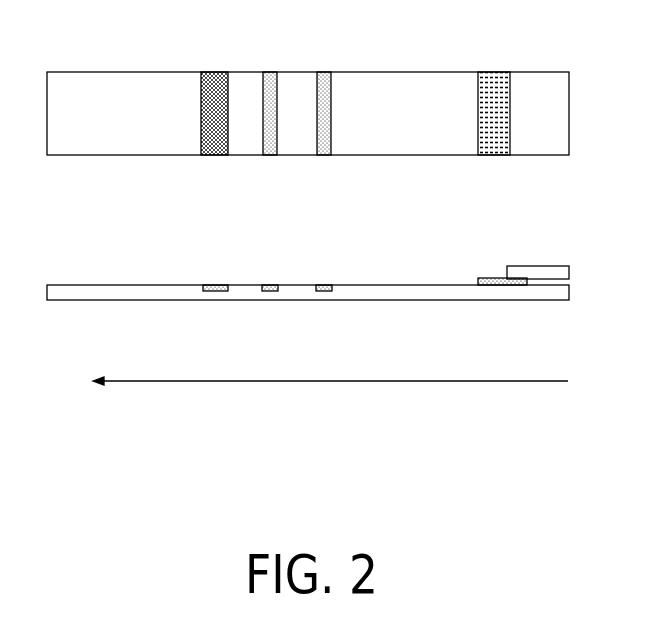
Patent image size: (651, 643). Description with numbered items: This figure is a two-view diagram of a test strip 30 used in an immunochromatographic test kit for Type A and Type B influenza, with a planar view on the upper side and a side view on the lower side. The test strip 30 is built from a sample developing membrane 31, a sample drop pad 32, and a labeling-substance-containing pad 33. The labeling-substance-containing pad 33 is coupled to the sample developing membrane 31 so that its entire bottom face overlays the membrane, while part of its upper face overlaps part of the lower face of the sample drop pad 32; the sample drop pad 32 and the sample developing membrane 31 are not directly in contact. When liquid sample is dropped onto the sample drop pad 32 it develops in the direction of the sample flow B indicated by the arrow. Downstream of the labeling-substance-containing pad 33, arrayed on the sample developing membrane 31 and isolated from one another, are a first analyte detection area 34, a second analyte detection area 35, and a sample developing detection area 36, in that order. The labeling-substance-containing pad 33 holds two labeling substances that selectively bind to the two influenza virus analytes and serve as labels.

The test strip 30 is at (298, 27).
The sample developing membrane 31 is at (97, 157).
The sample drop pad 32 is at (536, 138).
The labeling-substance-containing pad 33 is at (485, 157).
The first analyte detection area 34 is at (318, 157).
The second analyte detection area 35 is at (263, 157).
The sample developing detection area 36 is at (208, 157).
The sample flow B is at (310, 382).